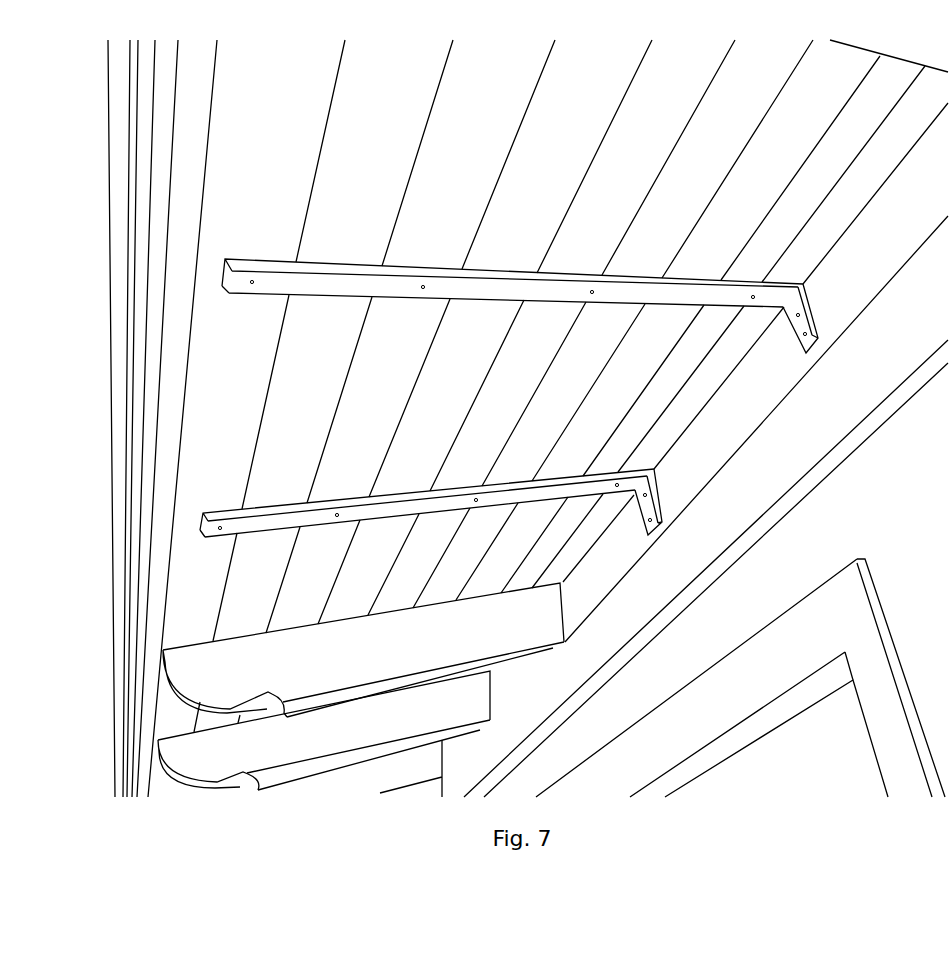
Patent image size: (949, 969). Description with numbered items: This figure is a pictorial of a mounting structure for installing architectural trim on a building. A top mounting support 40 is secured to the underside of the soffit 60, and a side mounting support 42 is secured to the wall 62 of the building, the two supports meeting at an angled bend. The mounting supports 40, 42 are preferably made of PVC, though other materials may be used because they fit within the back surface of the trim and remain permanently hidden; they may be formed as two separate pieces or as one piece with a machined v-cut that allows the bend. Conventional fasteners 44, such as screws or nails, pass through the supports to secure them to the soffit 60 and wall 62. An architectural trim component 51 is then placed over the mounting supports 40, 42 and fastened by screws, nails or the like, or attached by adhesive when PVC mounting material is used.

The top mounting support 40 is at (472, 288).
The side mounting support 42 is at (822, 331).
The fasteners 44 is at (252, 284).
The architectural trim component 51 is at (553, 642).
The soffit 60 is at (571, 386).
The wall 62 is at (889, 140).